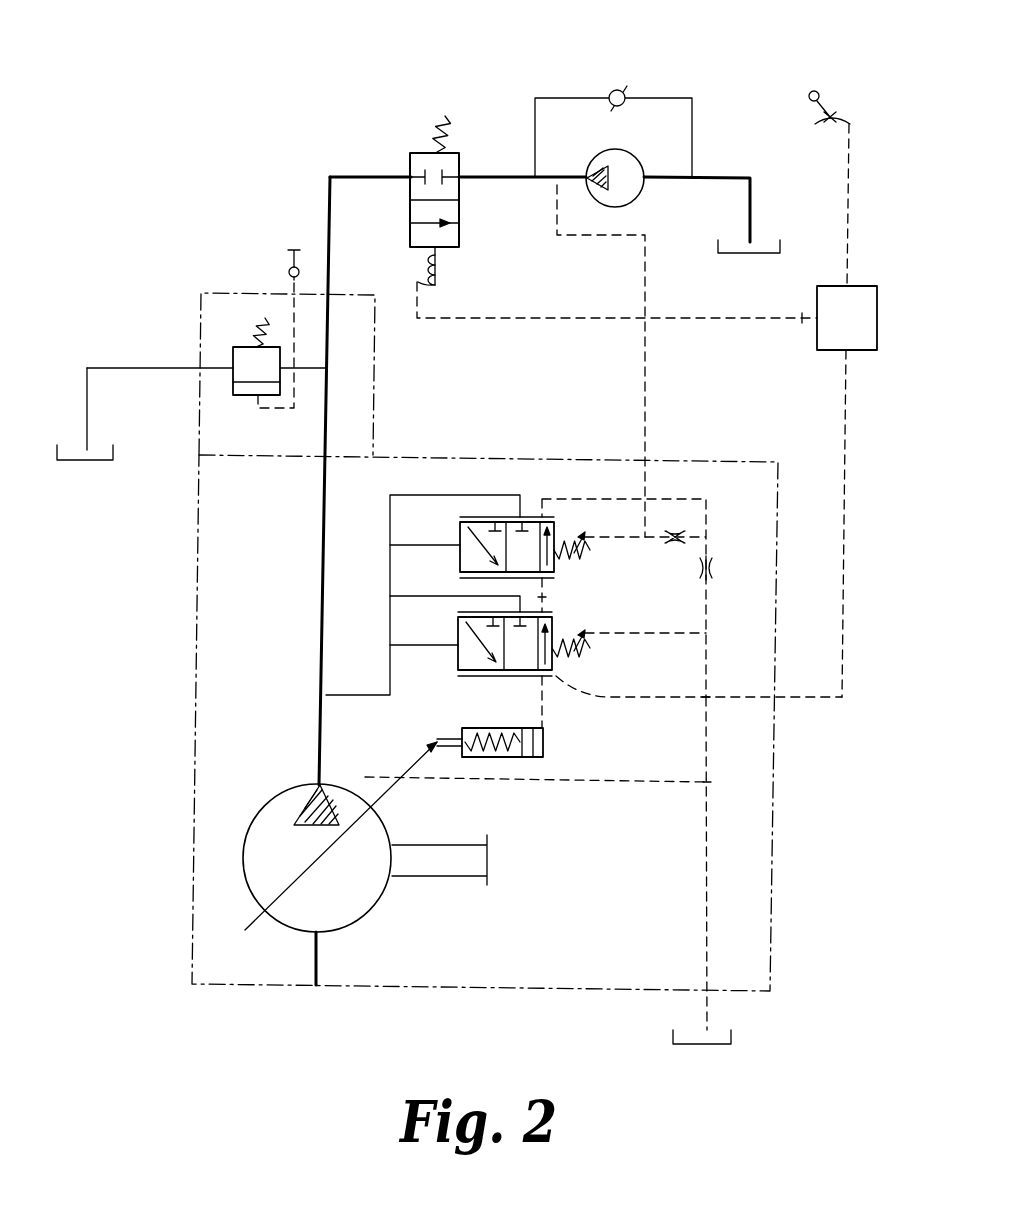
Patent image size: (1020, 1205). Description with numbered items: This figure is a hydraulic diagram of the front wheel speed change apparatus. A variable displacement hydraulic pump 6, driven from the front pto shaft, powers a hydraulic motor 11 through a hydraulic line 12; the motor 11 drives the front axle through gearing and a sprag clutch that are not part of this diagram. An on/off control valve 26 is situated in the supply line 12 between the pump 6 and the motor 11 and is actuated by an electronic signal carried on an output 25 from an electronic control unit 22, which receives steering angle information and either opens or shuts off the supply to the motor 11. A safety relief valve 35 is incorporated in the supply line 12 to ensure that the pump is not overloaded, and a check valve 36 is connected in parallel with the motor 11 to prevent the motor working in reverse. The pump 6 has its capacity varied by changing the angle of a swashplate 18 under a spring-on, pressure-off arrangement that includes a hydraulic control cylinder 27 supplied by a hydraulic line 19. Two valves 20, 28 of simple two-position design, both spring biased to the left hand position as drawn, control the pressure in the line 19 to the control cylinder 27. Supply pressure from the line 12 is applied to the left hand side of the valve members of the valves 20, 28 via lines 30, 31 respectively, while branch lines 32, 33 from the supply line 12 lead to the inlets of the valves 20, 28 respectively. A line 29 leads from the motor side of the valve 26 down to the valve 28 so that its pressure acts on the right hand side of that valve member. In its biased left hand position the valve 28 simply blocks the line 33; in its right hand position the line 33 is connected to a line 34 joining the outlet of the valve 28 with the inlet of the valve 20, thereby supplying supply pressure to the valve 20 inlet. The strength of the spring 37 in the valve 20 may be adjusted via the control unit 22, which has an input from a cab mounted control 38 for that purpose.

The variable displacement hydraulic pump 6 is at (384, 894).
The hydraulic motor 11 is at (640, 198).
The hydraulic line 12 is at (320, 540).
The swashplate 18 is at (395, 778).
The hydraulic line 19 is at (537, 693).
The valve 20 is at (553, 673).
The electronic control unit 22 is at (858, 286).
The output 25 is at (802, 323).
The on/off control valve 26 is at (458, 153).
The hydraulic control cylinder 27 is at (470, 728).
The valve 28 is at (530, 517).
The line 29 is at (647, 405).
The line 30 is at (420, 645).
The line 31 is at (423, 545).
The branch line 32 is at (428, 596).
The branch line 33 is at (420, 495).
The line 34 is at (547, 597).
The safety relief valve 35 is at (233, 347).
The check valve 36 is at (626, 90).
The spring 37 is at (592, 652).
The cab mounted control 38 is at (830, 117).